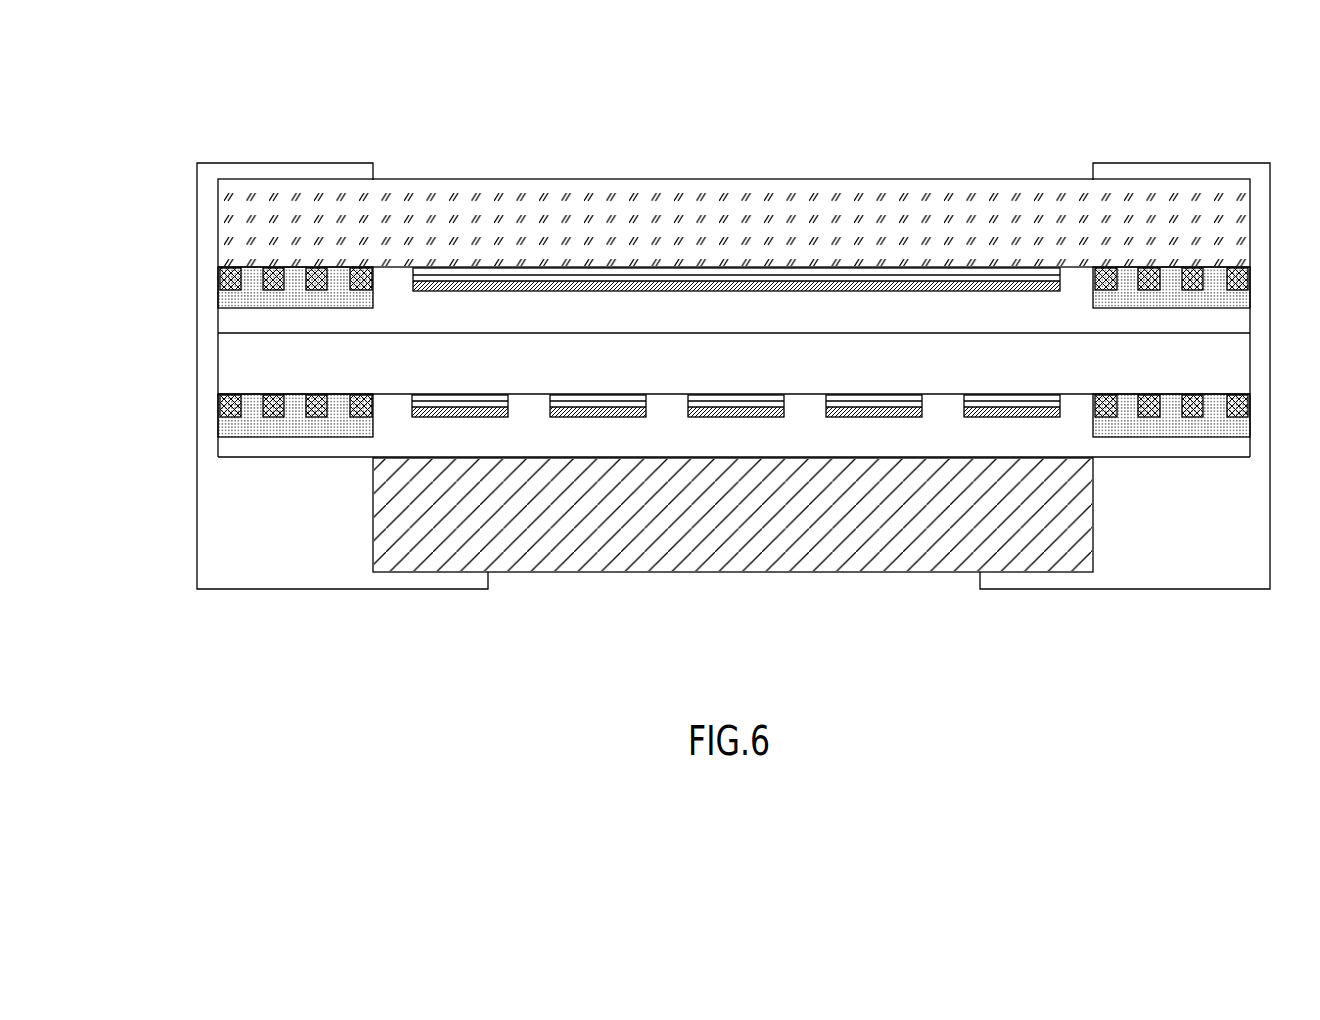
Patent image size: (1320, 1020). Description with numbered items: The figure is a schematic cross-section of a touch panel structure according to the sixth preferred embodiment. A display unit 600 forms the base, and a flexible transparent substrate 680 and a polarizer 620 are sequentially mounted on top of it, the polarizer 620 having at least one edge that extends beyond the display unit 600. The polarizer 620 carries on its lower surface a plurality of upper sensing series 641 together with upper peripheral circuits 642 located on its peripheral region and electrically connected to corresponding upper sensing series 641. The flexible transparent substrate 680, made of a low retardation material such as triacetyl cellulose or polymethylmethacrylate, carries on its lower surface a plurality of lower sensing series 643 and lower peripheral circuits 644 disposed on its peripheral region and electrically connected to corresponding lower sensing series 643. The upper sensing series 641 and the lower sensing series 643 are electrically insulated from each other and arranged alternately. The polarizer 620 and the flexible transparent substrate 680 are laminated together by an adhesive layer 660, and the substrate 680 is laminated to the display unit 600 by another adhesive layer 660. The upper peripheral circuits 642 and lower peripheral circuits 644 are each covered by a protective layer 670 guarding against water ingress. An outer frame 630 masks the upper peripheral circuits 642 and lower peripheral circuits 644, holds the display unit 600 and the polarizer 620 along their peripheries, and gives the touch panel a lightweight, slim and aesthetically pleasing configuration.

The display unit 600 is at (642, 523).
The polarizer 620 is at (617, 227).
The outer frame 630 is at (297, 568).
The upper sensing series 641 is at (450, 277).
The upper peripheral circuits 642 is at (317, 267).
The lower sensing series 643 is at (435, 407).
The lower peripheral circuits 644 is at (310, 410).
The adhesive layer 660 is at (792, 435).
The protective layer 670 is at (1168, 300).
The flexible transparent substrate 680 is at (465, 375).